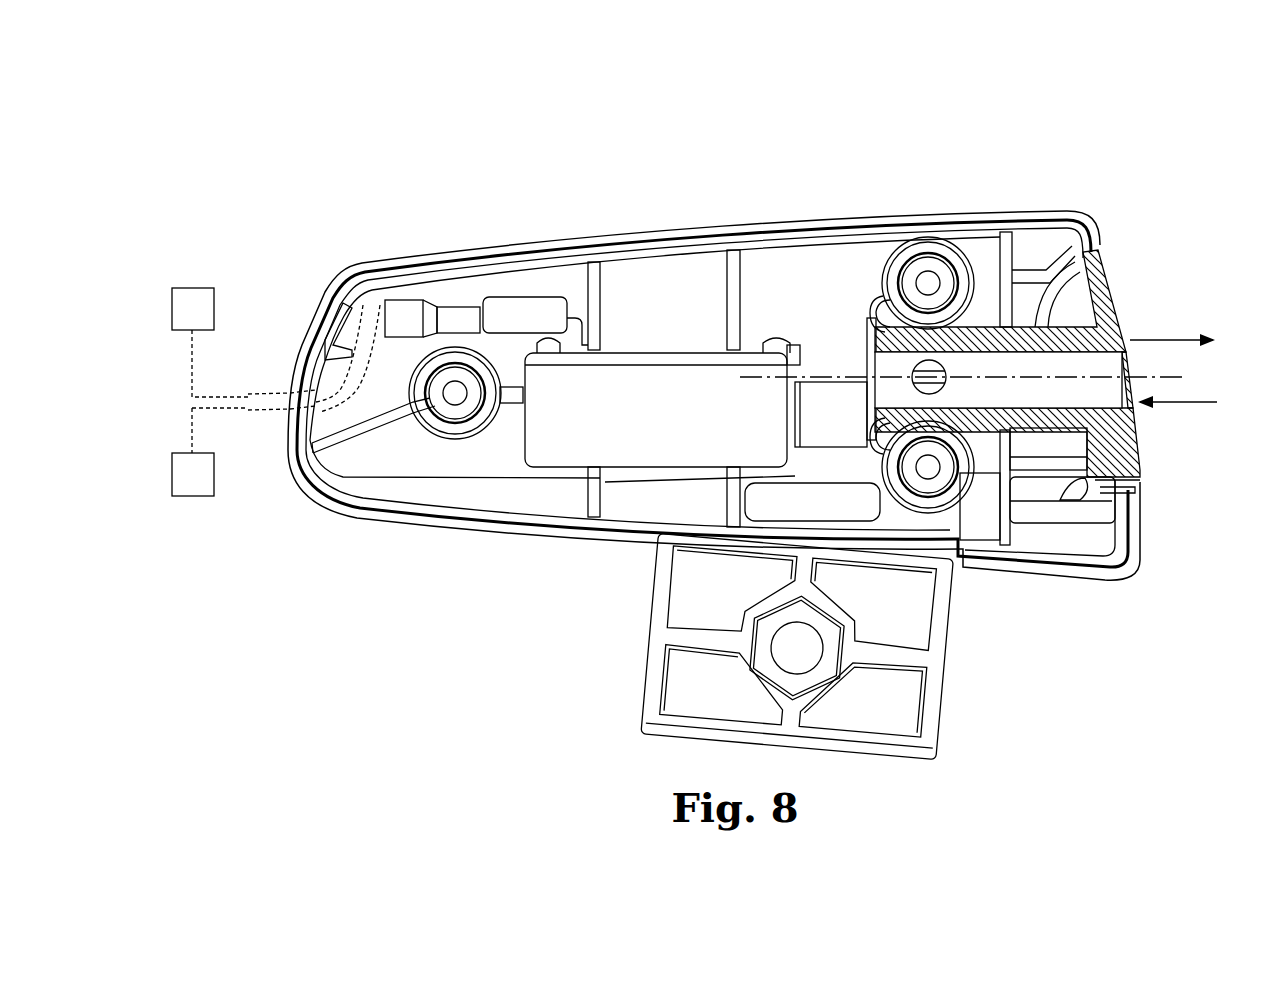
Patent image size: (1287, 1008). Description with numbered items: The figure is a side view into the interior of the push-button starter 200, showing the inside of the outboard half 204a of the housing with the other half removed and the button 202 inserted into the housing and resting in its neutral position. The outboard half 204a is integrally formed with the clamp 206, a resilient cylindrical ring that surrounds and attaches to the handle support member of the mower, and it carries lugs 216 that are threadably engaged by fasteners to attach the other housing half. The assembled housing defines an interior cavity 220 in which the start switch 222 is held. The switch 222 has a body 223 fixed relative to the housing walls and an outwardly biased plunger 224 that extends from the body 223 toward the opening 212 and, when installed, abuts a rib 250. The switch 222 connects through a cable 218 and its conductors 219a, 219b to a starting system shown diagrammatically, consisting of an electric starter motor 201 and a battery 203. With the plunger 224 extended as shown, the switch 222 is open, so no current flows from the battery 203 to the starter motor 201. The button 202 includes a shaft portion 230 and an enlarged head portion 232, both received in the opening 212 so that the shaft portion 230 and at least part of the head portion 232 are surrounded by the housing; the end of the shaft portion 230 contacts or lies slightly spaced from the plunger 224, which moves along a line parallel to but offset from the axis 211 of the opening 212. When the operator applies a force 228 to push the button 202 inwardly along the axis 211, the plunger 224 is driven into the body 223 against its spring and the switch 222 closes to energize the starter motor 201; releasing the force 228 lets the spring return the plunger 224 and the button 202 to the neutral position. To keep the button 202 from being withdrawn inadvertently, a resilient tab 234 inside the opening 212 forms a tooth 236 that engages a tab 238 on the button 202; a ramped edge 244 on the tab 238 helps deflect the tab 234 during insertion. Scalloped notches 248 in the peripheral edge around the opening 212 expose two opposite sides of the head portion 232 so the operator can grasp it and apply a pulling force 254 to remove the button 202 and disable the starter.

The push-button starter 200 is at (1005, 115).
The electric starter motor 201 is at (192, 496).
The button 202 is at (1073, 277).
The battery 203 is at (190, 288).
The outboard half 204a is at (517, 252).
The clamp 206 is at (955, 742).
The axis 211 is at (1170, 377).
The opening 212 is at (1072, 300).
The lugs 216 is at (443, 345).
The cable 218 is at (248, 395).
The conductor 219a is at (193, 368).
The conductor 219b is at (193, 417).
The interior cavity 220 is at (617, 297).
The start switch 222 is at (523, 465).
The body 223 is at (545, 470).
The plunger 224 is at (820, 452).
The force 228 is at (1182, 402).
The shaft portion 230 is at (1003, 238).
The head portion 232 is at (1143, 452).
The tab 234 is at (1060, 505).
The tooth 236 is at (1137, 482).
The tab 238 is at (1077, 478).
The ramped edge 244 is at (1097, 535).
The notched areas 248 is at (1073, 320).
The rib 250 is at (875, 325).
The pulling force 254 is at (1170, 340).